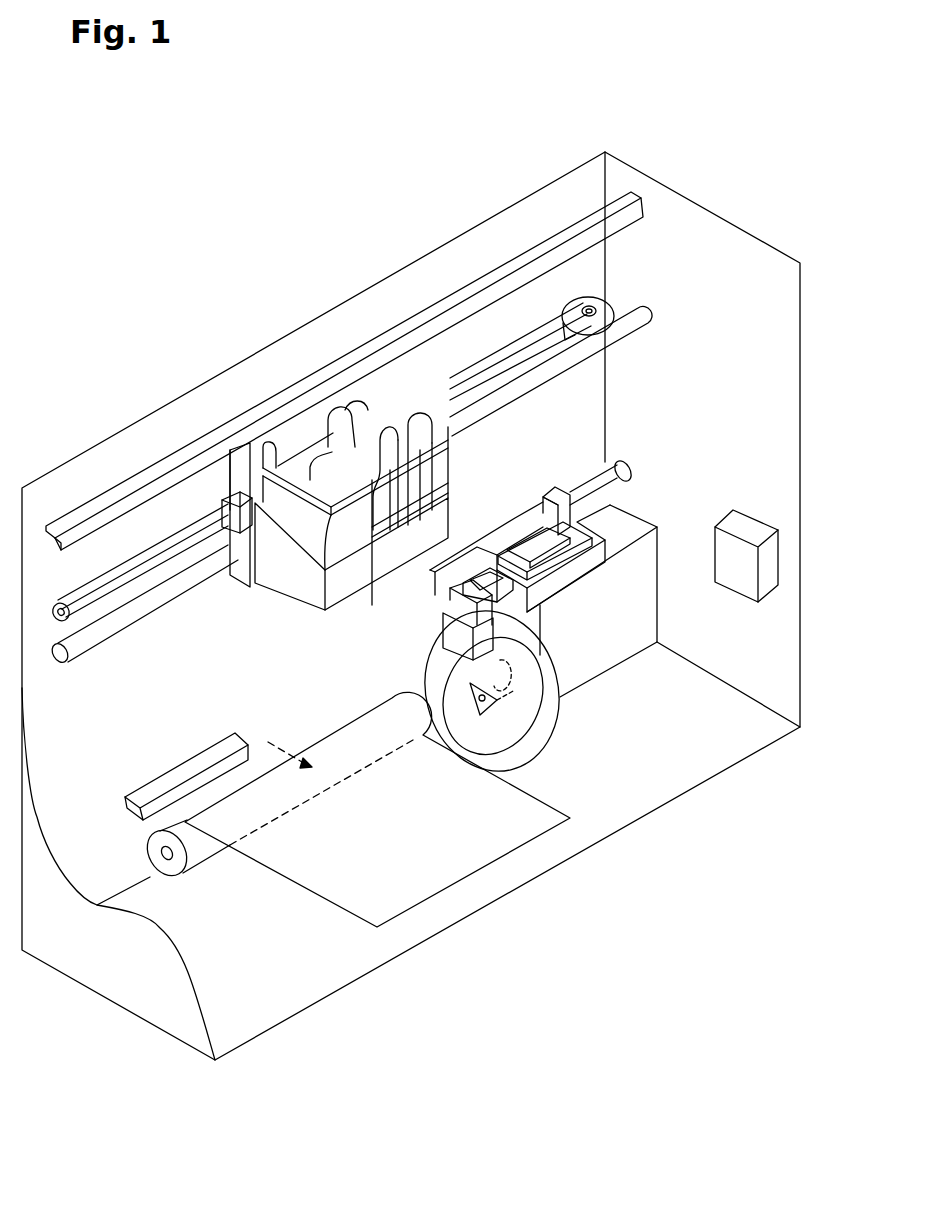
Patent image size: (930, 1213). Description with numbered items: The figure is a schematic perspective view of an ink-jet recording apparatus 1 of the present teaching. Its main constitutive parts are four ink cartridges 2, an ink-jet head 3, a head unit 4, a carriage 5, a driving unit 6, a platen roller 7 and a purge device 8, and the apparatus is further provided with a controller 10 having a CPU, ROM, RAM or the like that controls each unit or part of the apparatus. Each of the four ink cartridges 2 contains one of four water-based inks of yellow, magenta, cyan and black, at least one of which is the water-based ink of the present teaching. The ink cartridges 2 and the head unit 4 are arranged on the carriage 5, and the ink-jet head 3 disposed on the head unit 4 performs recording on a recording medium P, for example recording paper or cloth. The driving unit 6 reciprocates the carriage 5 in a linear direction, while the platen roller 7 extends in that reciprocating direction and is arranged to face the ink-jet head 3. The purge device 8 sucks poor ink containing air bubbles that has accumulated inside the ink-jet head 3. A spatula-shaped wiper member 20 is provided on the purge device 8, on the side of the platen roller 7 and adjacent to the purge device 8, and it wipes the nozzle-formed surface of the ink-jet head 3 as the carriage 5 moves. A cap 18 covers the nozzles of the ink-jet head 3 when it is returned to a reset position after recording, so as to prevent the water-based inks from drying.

The ink-jet recording apparatus 1 is at (310, 185).
The ink cartridges 2 is at (360, 405).
The ink-jet head 3 is at (385, 573).
The head unit 4 is at (373, 602).
The carriage 5 is at (240, 470).
The driving unit 6 is at (630, 182).
The platen roller 7 is at (202, 843).
The purge device 8 is at (712, 627).
The controller 10 is at (752, 528).
The cap 18 is at (557, 537).
The wiper member 20 is at (465, 615).
The recording medium P is at (365, 900).